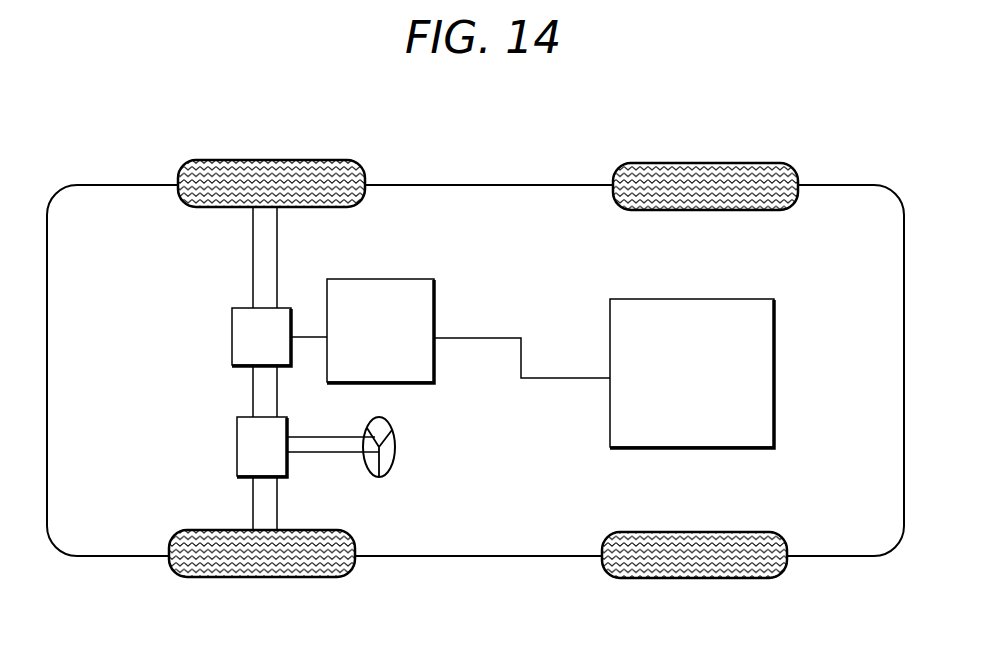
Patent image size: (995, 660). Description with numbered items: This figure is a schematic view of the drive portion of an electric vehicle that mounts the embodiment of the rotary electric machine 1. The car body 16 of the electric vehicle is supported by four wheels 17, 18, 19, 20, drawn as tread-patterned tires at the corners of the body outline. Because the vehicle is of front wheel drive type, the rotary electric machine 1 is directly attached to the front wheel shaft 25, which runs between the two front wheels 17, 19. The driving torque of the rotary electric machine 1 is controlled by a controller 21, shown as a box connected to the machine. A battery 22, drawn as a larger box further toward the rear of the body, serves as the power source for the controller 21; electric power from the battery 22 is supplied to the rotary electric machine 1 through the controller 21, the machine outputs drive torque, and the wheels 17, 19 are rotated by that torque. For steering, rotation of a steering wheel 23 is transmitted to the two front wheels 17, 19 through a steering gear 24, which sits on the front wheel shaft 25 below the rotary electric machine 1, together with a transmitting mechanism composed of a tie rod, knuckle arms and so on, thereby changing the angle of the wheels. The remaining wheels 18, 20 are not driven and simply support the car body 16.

The rotary electric machine 1 is at (246, 334).
The car body 16 is at (407, 186).
The wheel 17 is at (287, 160).
The wheel 18 is at (640, 163).
The wheel 19 is at (298, 577).
The wheel 20 is at (711, 578).
The controller 21 is at (434, 312).
The battery 22 is at (768, 381).
The steering wheel 23 is at (396, 449).
The steering gear 24 is at (237, 447).
The front wheel shaft 25 is at (252, 405).